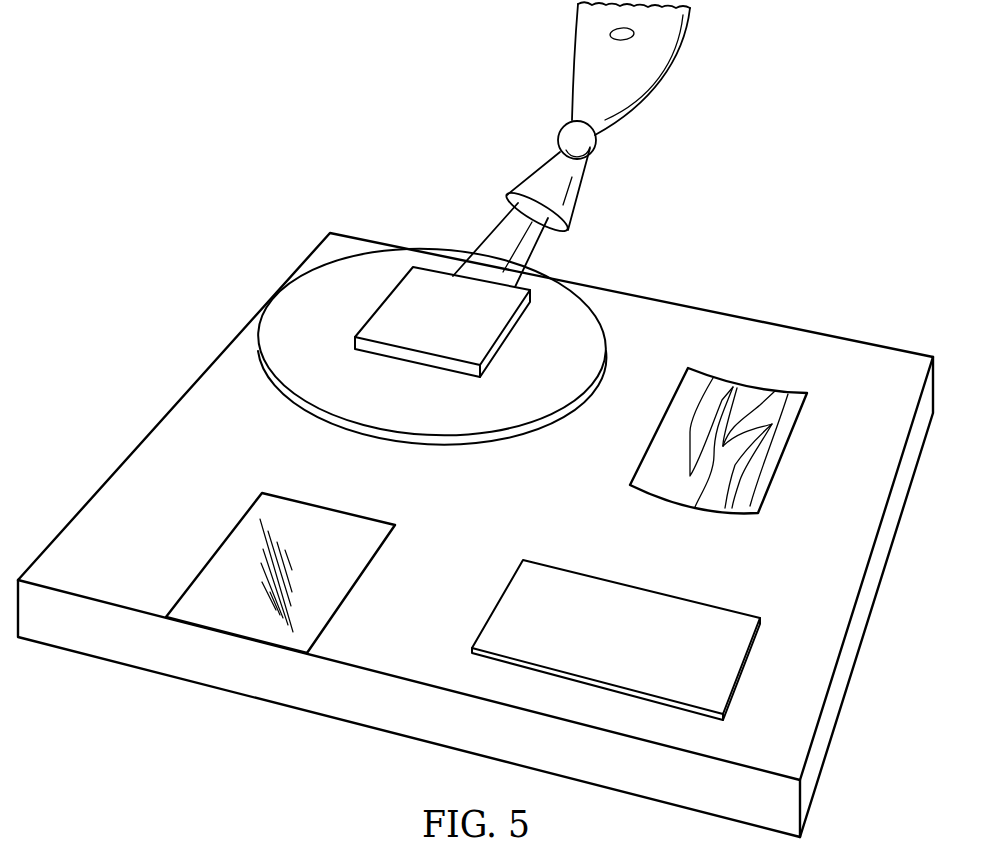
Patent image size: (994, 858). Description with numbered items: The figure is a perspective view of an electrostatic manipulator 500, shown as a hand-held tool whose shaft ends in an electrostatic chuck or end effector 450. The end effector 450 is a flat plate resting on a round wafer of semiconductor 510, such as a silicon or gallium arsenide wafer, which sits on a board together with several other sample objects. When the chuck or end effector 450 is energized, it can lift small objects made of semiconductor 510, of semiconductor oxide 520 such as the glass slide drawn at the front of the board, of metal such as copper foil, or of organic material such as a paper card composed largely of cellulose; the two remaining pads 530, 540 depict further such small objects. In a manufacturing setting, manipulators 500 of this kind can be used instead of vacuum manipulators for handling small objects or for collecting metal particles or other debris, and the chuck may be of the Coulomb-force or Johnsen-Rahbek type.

The electrostatic chuck or end effector 450 is at (433, 280).
The electrostatic manipulator 500 is at (537, 173).
The semiconductor 510 is at (278, 300).
The semiconductor oxide 520 is at (225, 555).
The wood veneer test pad 530 is at (782, 453).
The flat test pad 540 is at (632, 597).